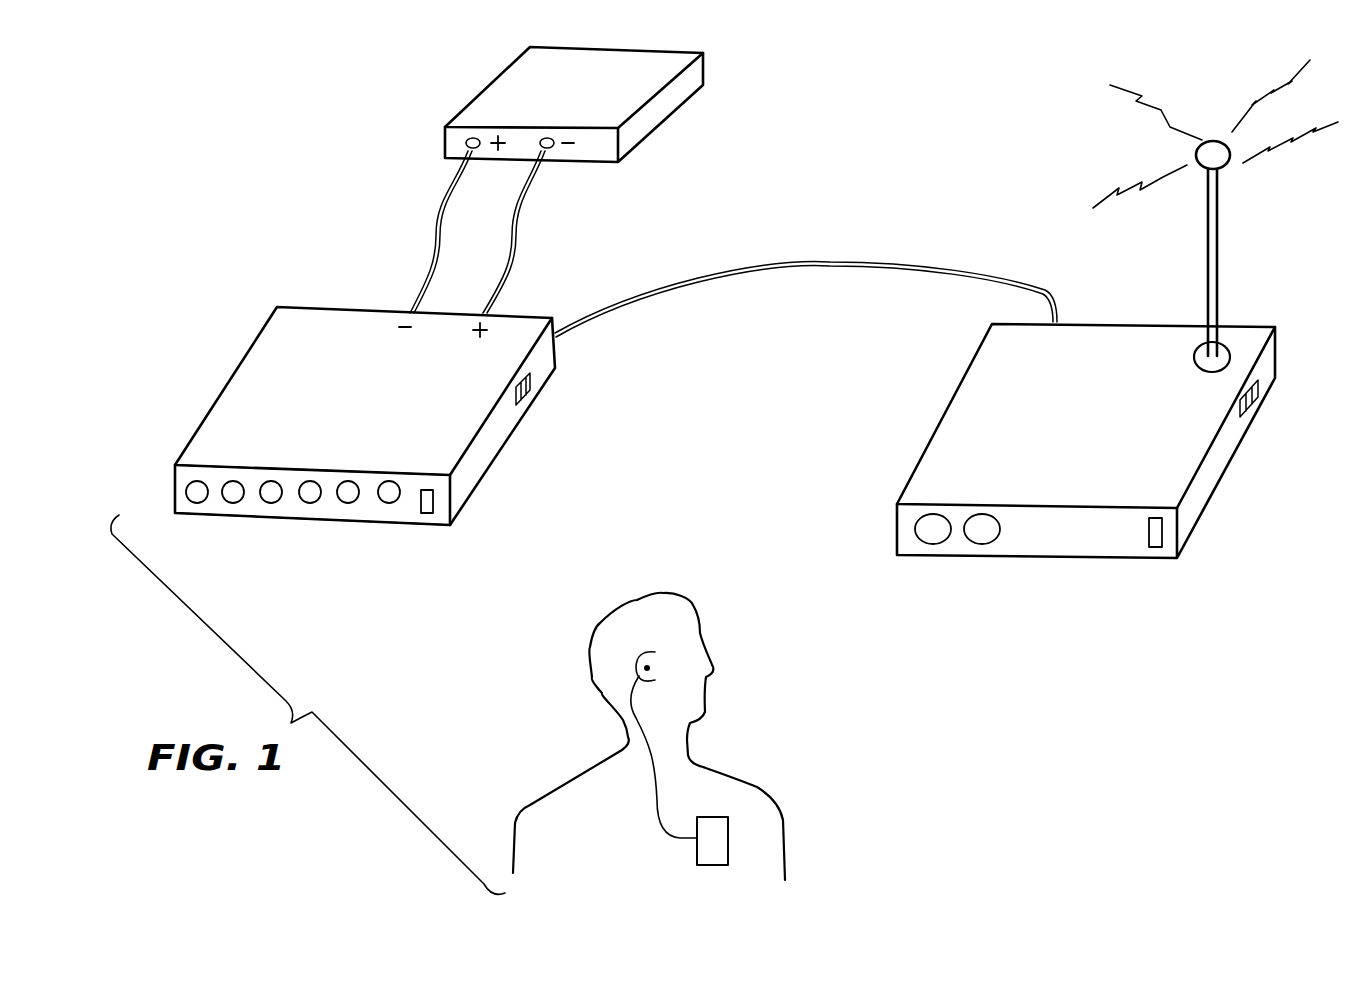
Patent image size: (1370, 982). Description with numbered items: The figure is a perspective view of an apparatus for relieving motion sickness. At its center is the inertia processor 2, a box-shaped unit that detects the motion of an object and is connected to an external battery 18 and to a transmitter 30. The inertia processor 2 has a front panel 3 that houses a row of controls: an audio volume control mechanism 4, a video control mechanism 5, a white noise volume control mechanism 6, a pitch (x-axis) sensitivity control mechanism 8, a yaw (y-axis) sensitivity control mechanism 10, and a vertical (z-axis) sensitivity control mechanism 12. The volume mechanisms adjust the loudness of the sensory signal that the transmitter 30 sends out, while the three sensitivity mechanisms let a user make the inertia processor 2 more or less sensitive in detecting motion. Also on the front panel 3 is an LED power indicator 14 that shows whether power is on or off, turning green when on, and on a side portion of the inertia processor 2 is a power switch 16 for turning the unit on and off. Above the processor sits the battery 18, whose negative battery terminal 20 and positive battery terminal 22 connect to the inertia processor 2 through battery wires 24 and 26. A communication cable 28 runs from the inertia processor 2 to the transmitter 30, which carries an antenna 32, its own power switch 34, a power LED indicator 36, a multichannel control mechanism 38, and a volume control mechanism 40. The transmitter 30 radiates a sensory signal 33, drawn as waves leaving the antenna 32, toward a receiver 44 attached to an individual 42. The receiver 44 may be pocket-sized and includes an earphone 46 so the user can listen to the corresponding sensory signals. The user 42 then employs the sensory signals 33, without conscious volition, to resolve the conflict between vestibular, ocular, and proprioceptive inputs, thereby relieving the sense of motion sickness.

The inertia processor 2 is at (246, 352).
The front panel 3 is at (172, 485).
The audio volume control mechanism 4 is at (197, 503).
The video control mechanism 5 is at (233, 503).
The white noise volume control mechanism 6 is at (271, 503).
The pitch (x-axis) sensitivity control mechanism 8 is at (310, 503).
The yaw (y-axis) sensitivity control mechanism 10 is at (348, 503).
The vertical (z-axis) sensitivity control mechanism 12 is at (389, 503).
The LED power indicator 14 is at (427, 513).
The power switch 16 is at (532, 391).
The external battery 18 is at (474, 70).
The negative battery terminal 20 is at (556, 132).
The positive battery terminal 22 is at (485, 133).
The battery wire 24 is at (433, 236).
The battery wire 26 is at (517, 251).
The communication cable 28 is at (775, 276).
The transmitter 30 is at (951, 397).
The antenna 32 is at (1220, 258).
The sensory signal 33 is at (1326, 134).
The power switch 34 is at (1263, 401).
The power LED indicator 36 is at (1155, 548).
The multichannel control mechanism 38 is at (982, 544).
The volume control mechanism 40 is at (933, 544).
The individual 42 is at (722, 637).
The receiver 44 is at (764, 835).
The earphone 46 is at (637, 746).